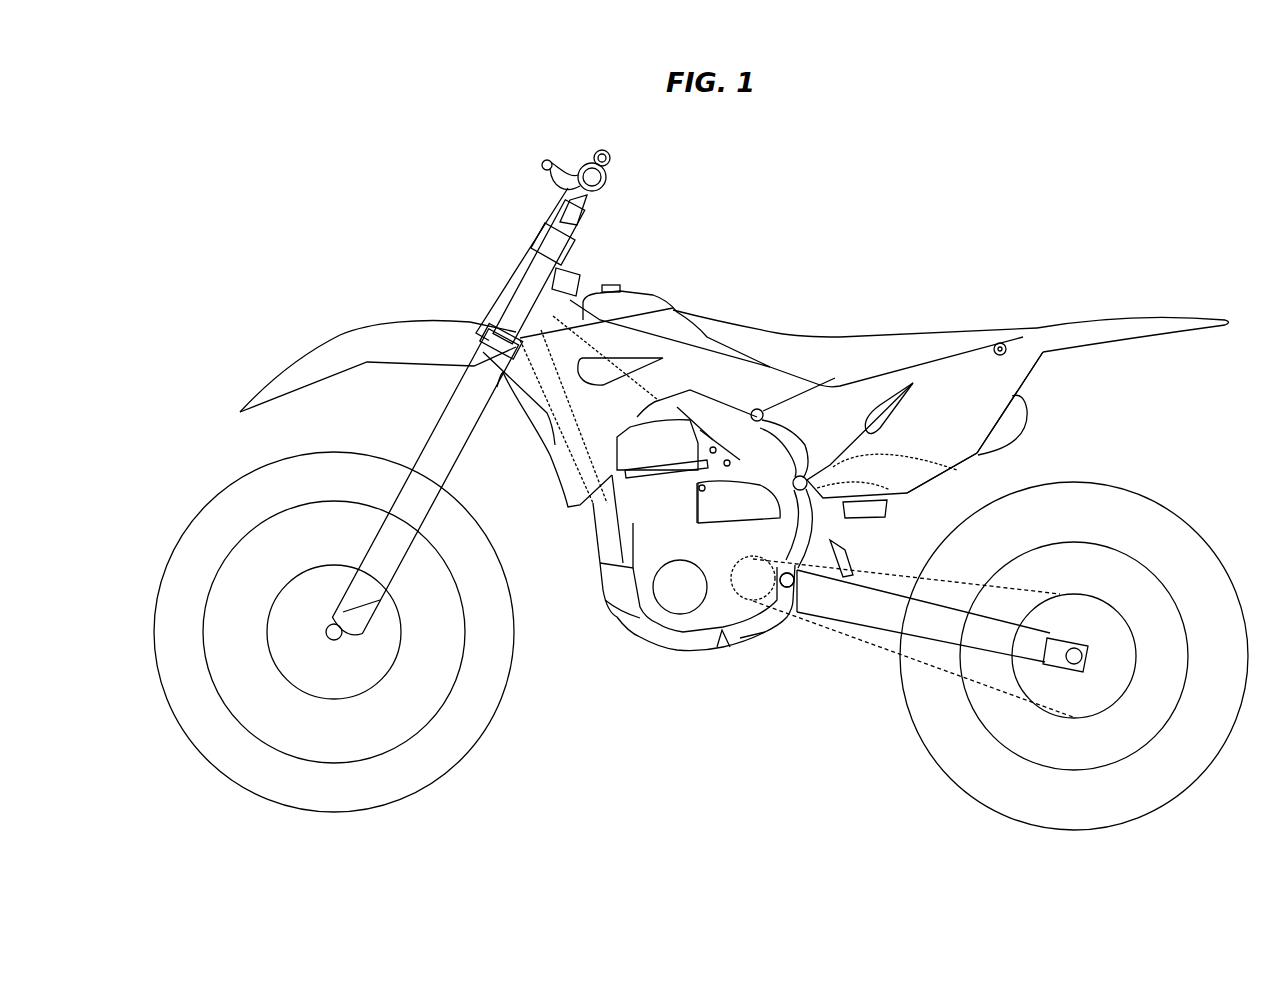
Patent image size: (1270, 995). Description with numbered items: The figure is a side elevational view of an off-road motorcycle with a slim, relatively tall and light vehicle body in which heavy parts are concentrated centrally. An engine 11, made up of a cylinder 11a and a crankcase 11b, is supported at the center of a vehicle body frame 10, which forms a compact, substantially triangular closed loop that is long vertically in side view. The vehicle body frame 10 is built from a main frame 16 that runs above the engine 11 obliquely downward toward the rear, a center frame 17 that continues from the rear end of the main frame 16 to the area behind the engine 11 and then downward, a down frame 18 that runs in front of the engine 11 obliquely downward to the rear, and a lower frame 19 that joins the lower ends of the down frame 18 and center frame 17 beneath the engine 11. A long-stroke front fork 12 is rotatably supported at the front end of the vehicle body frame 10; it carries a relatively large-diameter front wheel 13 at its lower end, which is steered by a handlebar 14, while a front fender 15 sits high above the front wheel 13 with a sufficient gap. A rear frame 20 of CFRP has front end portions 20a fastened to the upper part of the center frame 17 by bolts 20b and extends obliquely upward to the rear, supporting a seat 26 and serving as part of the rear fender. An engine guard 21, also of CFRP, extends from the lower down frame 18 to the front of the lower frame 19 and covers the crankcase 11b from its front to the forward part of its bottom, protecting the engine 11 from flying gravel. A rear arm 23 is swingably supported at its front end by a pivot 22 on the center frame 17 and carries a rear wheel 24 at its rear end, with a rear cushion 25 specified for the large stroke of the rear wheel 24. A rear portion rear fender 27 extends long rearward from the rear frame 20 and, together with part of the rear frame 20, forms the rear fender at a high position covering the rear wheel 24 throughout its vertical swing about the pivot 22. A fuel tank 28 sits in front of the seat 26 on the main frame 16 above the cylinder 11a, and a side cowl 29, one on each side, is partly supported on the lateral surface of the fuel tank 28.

The vehicle body frame 10 is at (690, 385).
The engine 11 is at (647, 563).
The cylinder 11a is at (610, 520).
The crankcase 11b is at (717, 620).
The front fork 12 is at (447, 424).
The front wheel 13 is at (306, 453).
The handlebar 14 is at (612, 170).
The front fender 15 is at (354, 330).
The main frame 16 is at (741, 410).
The center frame 17 is at (856, 521).
The down frame 18 is at (567, 492).
The lower frame 19 is at (760, 634).
The rear frame 20 is at (877, 373).
The front end portions 20a is at (775, 403).
The bolts 20b is at (760, 400).
The engine guard 21 is at (632, 628).
The pivot 22 is at (790, 588).
The rear arm 23 is at (881, 614).
The rear wheel 24 is at (1098, 483).
The rear cushion 25 is at (848, 548).
The seat 26 is at (860, 332).
The rear portion rear fender 27 is at (1063, 325).
The fuel tank 28 is at (630, 290).
The side cowl 29 is at (547, 422).